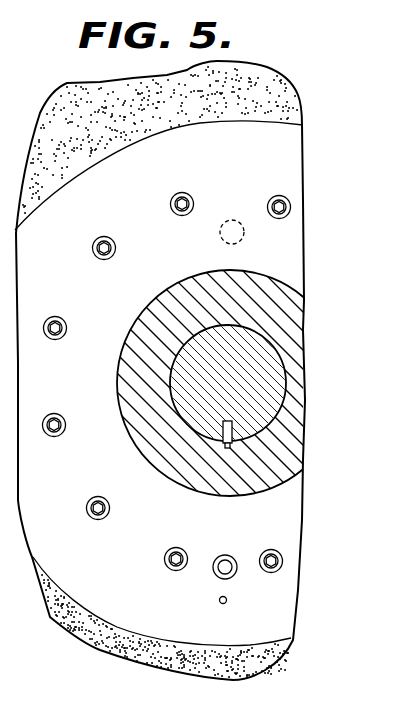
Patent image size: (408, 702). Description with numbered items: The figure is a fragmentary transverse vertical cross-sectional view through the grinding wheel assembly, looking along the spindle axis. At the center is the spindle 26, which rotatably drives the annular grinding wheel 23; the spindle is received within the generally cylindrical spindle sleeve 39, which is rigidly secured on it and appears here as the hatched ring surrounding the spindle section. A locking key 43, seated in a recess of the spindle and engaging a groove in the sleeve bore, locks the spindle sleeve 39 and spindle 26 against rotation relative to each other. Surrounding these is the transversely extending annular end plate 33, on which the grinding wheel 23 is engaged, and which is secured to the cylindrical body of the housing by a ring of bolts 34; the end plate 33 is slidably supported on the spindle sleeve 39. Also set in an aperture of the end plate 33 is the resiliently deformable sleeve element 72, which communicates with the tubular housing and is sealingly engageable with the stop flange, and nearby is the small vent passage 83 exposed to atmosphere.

The grinding wheel 23 is at (257, 85).
The annular end plate 33 is at (147, 180).
The bolts 34 is at (190, 196).
The spindle sleeve 39 is at (177, 284).
The spindle 26 is at (200, 418).
The locking key 43 is at (228, 448).
The resiliently deformable sleeve element 72 is at (217, 575).
The vent passage 83 is at (227, 600).